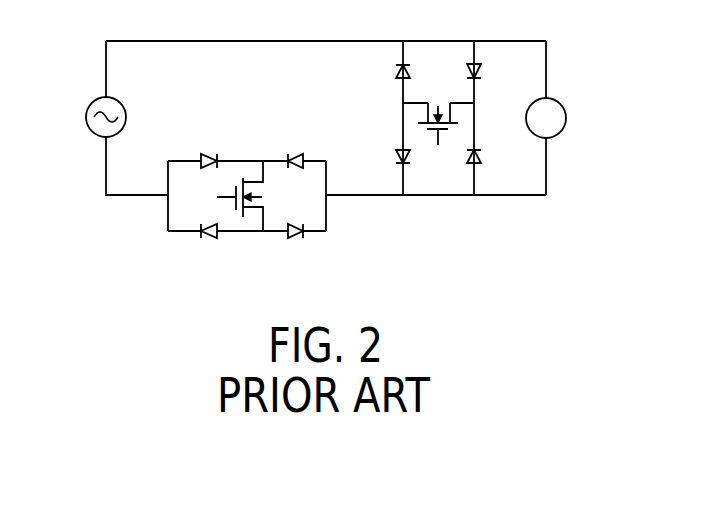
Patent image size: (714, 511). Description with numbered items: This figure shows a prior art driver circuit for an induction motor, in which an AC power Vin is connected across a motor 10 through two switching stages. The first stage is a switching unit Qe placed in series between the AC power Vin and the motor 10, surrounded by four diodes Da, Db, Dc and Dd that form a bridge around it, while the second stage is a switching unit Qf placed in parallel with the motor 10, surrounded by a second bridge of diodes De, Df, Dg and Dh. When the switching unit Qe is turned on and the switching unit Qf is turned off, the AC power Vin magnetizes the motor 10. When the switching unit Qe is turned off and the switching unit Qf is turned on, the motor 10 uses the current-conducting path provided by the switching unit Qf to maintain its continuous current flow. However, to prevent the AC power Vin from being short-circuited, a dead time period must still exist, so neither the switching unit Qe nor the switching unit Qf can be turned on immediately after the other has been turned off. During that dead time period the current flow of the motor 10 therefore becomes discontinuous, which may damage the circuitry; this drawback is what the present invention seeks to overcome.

The motor 10 is at (556, 99).
The AC power Vin is at (93, 106).
The diode Da is at (205, 148).
The diode Db is at (205, 246).
The diode Dc is at (296, 148).
The diode Dd is at (296, 246).
The diode De is at (488, 73).
The diode Df is at (390, 73).
The diode Dg is at (488, 159).
The diode Dh is at (390, 159).
The switching unit Qe is at (253, 196).
The switching unit Qf is at (438, 112).